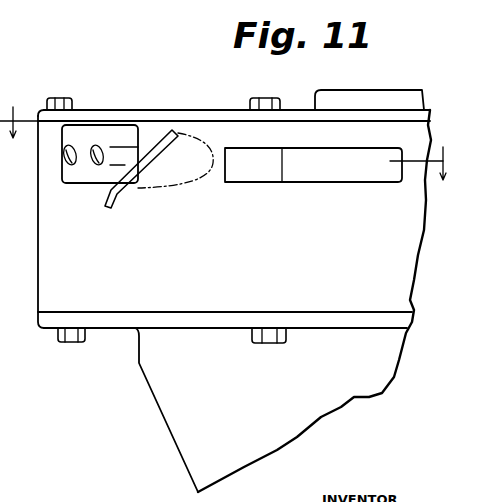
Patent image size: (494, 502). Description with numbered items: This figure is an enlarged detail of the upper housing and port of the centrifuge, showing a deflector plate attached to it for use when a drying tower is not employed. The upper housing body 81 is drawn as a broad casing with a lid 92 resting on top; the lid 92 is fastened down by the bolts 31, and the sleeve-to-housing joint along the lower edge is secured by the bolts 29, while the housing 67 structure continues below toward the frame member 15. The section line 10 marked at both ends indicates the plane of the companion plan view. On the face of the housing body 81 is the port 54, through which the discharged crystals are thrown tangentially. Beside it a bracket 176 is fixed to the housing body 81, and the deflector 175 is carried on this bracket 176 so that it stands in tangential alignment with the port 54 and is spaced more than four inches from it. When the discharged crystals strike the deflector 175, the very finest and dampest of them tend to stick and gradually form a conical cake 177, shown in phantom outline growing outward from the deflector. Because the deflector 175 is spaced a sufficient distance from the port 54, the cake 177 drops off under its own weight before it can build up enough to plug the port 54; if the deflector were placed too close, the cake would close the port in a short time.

The section line 10 is at (227, 160).
The frame member 15 is at (6, 445).
The bolts 29 is at (84, 343).
The bolts 31 is at (55, 98).
The port 54 is at (344, 179).
The housing 67 is at (162, 408).
The housing body 81 is at (47, 253).
The lid 92 is at (152, 110).
The deflector 175 is at (178, 134).
The bracket 176 is at (102, 182).
The conical cake 177 is at (182, 178).